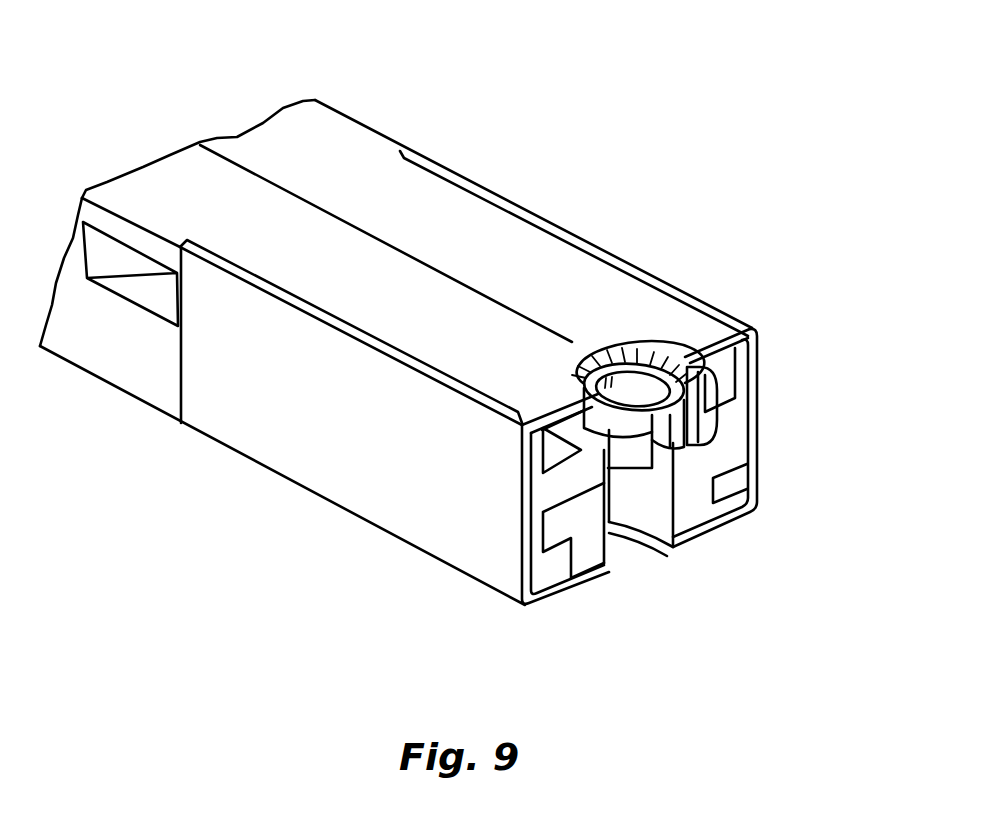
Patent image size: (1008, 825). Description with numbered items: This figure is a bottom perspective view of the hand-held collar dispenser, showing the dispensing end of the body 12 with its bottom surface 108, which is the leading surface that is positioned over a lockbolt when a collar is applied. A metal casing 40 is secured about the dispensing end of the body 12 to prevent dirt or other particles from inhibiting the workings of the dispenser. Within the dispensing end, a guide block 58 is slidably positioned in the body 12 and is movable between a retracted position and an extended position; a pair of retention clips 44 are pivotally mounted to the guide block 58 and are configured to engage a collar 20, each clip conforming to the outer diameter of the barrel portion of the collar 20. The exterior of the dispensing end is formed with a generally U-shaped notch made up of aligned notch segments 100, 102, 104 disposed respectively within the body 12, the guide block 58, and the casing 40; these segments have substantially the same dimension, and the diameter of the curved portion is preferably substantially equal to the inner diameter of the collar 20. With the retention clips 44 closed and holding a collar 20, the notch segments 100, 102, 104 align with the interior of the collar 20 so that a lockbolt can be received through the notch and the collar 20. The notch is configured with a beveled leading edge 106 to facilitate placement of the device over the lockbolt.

The body 12 is at (327, 160).
The collar 20 is at (676, 463).
The casing 40 is at (350, 450).
The retention clips 44 is at (607, 450).
The guide block 58 is at (692, 500).
The notch segment 100 is at (665, 335).
The notch segment 102 is at (657, 503).
The notch segment 104 is at (625, 530).
The beveled leading edge 106 is at (607, 350).
The bottom surface 108 is at (390, 305).